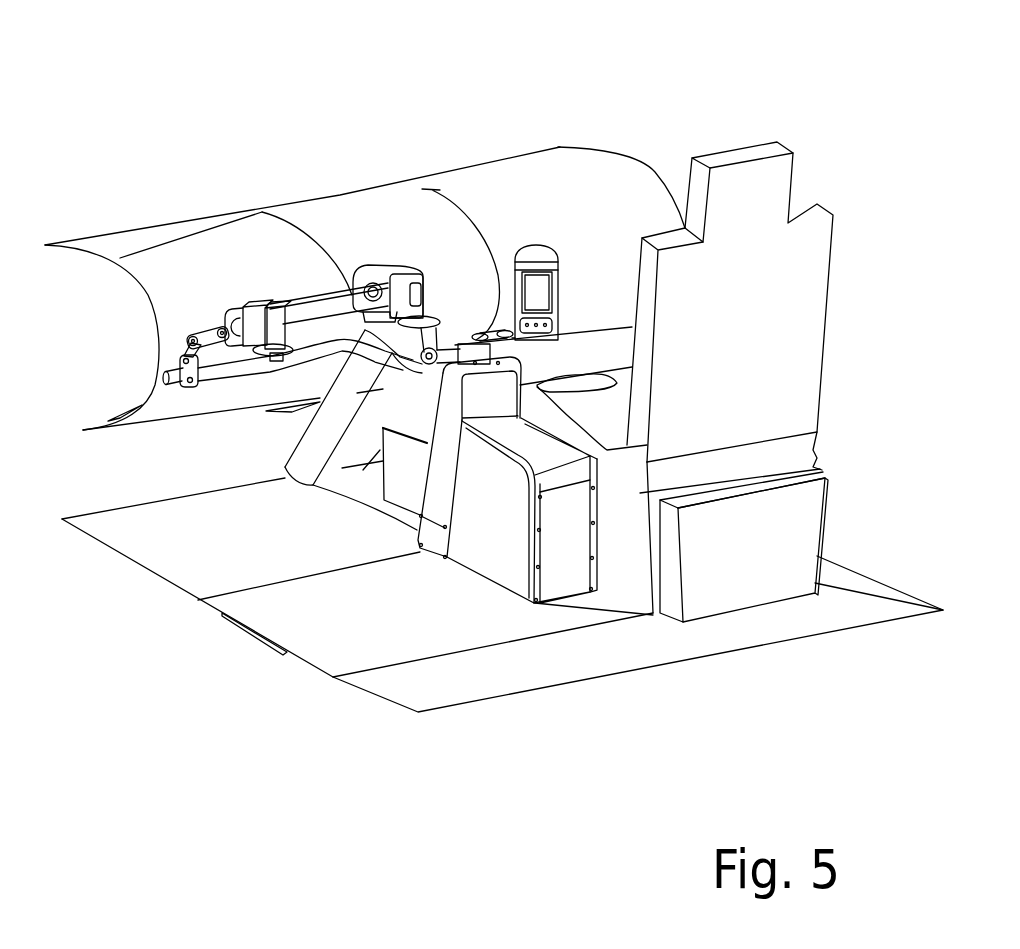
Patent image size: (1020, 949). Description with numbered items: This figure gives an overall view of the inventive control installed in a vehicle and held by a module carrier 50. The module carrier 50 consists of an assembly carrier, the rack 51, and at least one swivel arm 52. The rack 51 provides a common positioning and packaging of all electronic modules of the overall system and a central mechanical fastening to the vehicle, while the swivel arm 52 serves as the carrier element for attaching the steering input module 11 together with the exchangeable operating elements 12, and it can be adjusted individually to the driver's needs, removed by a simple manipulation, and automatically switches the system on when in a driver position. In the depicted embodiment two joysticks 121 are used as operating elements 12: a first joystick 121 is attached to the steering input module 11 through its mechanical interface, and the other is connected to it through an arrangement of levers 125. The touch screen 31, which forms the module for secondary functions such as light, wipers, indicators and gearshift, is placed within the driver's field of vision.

The steering input module 11 is at (407, 211).
The exchangeable operating element 12 is at (382, 275).
The touch screen 31 is at (537, 244).
The module carrier 50 is at (417, 822).
The rack 51 is at (488, 512).
The swivel arm 52 is at (233, 375).
The joystick 121 is at (264, 306).
The arrangement of levers 125 is at (317, 288).